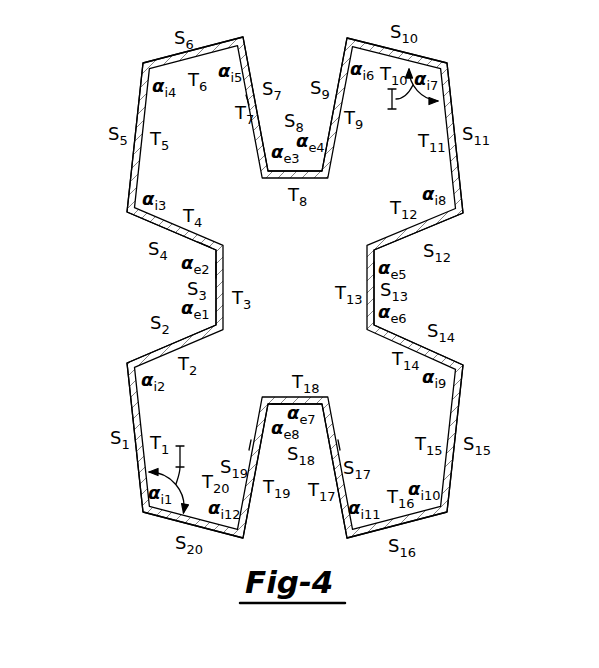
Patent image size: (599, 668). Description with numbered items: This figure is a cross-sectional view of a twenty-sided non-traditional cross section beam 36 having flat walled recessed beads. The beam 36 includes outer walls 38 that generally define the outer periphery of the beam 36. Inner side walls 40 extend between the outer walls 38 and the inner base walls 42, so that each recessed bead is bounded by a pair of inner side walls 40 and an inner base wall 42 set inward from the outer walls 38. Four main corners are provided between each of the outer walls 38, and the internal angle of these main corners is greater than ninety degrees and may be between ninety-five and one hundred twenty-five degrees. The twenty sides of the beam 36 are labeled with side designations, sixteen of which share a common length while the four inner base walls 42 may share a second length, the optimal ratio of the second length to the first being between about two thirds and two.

The 20-sided non-traditional cross section beam 36 is at (100, 76).
The outer walls 38 is at (128, 186).
The inner side walls 40 is at (248, 97).
The inner base walls 42 is at (225, 270).